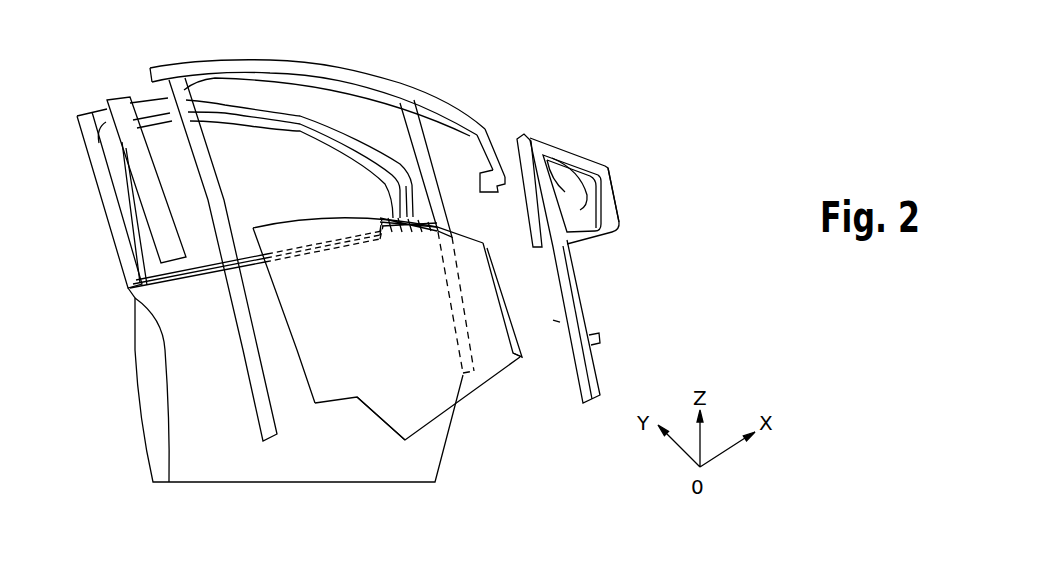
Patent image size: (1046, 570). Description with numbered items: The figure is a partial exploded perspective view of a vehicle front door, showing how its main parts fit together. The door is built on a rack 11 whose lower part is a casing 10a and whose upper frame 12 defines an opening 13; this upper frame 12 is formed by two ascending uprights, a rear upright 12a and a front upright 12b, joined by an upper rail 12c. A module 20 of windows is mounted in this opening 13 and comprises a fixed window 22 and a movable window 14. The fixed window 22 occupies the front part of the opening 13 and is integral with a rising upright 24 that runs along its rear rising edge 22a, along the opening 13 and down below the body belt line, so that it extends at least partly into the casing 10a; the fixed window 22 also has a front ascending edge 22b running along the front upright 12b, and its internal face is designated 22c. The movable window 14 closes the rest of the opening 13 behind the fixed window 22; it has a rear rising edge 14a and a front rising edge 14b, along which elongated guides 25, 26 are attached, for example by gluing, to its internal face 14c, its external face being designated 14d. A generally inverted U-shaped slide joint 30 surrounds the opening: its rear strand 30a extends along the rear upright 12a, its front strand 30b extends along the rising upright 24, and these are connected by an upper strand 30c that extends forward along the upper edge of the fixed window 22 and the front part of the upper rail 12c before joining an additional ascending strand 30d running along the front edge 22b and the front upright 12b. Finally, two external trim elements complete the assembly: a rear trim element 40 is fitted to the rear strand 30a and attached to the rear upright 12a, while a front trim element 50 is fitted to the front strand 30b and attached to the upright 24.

The casing 10a is at (203, 463).
The rack 11 is at (125, 410).
The upper frame 12 is at (77, 98).
The rear upright 12a is at (104, 212).
The front upright 12b is at (398, 196).
The upper rail 12c is at (287, 101).
The opening 13 is at (256, 232).
The movable window 14 is at (493, 360).
The rear rising edge 14a is at (307, 393).
The front rising edge 14b is at (522, 323).
The internal face 14c is at (472, 253).
The external face 14d is at (468, 268).
The module 20 is at (618, 140).
The fixed window 22 is at (578, 207).
The rear rising edge 22a is at (582, 195).
The front ascending edge 22b is at (612, 207).
The internal face 22c is at (594, 168).
The rising upright 24 is at (593, 317).
The guide 25 is at (307, 483).
The guide 26 is at (558, 323).
The slide joint 30 is at (373, 48).
The rear strand 30a is at (212, 161).
The front strand 30b is at (421, 147).
The upper strand 30c is at (268, 60).
The additional ascending strand 30d is at (480, 152).
The rear external trim element 40 is at (167, 222).
The front external trim element 50 is at (514, 133).